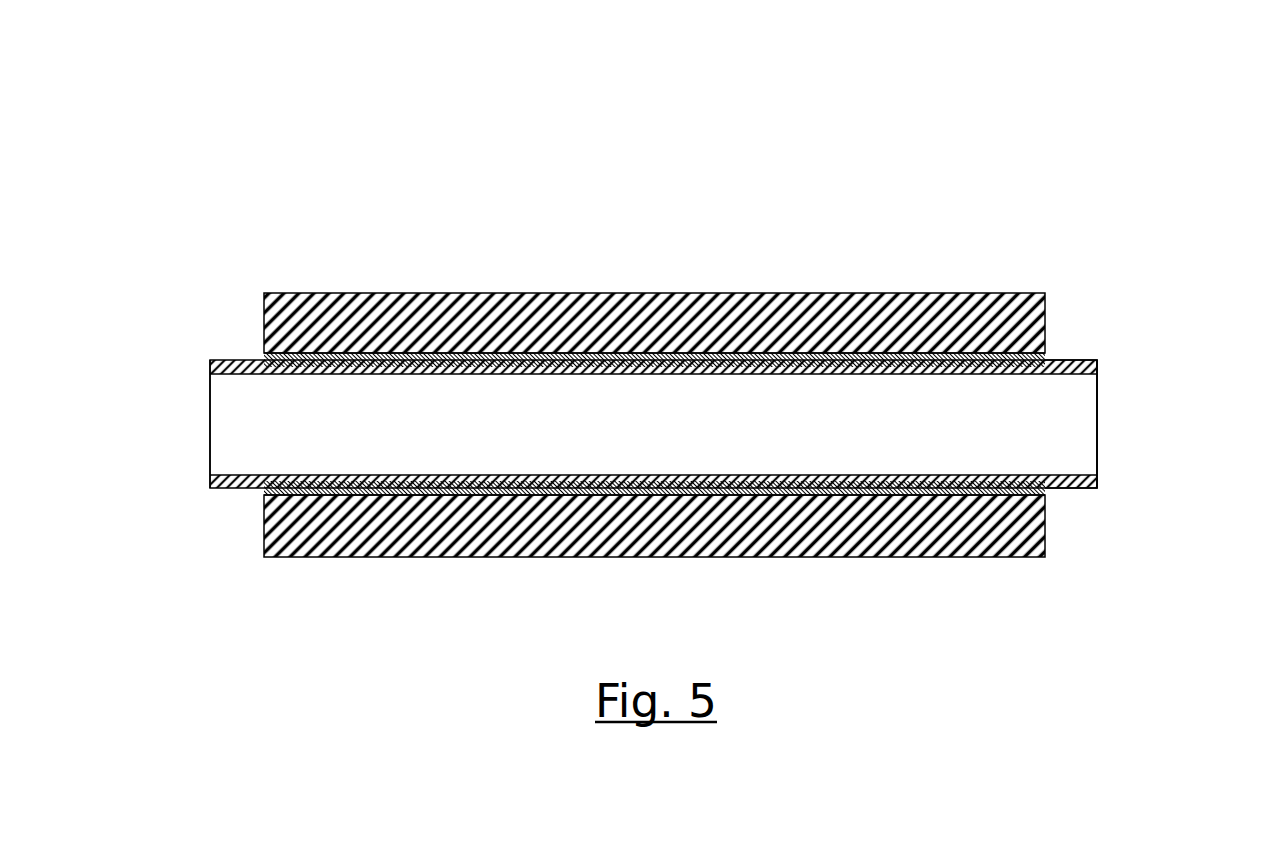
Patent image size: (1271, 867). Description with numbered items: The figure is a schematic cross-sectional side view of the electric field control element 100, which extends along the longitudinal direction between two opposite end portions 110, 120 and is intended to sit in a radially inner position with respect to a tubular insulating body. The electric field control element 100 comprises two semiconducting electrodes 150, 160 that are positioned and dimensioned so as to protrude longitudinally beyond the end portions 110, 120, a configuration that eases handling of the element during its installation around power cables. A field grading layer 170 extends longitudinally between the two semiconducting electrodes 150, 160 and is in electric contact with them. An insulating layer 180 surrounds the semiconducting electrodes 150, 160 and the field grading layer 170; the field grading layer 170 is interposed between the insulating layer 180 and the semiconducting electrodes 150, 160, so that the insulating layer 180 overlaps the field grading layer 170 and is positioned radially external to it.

The electric field control element 100 is at (868, 148).
The end portion 110 is at (190, 423).
The end portion 120 is at (1112, 427).
The semiconducting electrode 150 is at (225, 358).
The semiconducting electrode 160 is at (1097, 360).
The field grading layer 170 is at (640, 350).
The insulating layer 180 is at (1030, 310).